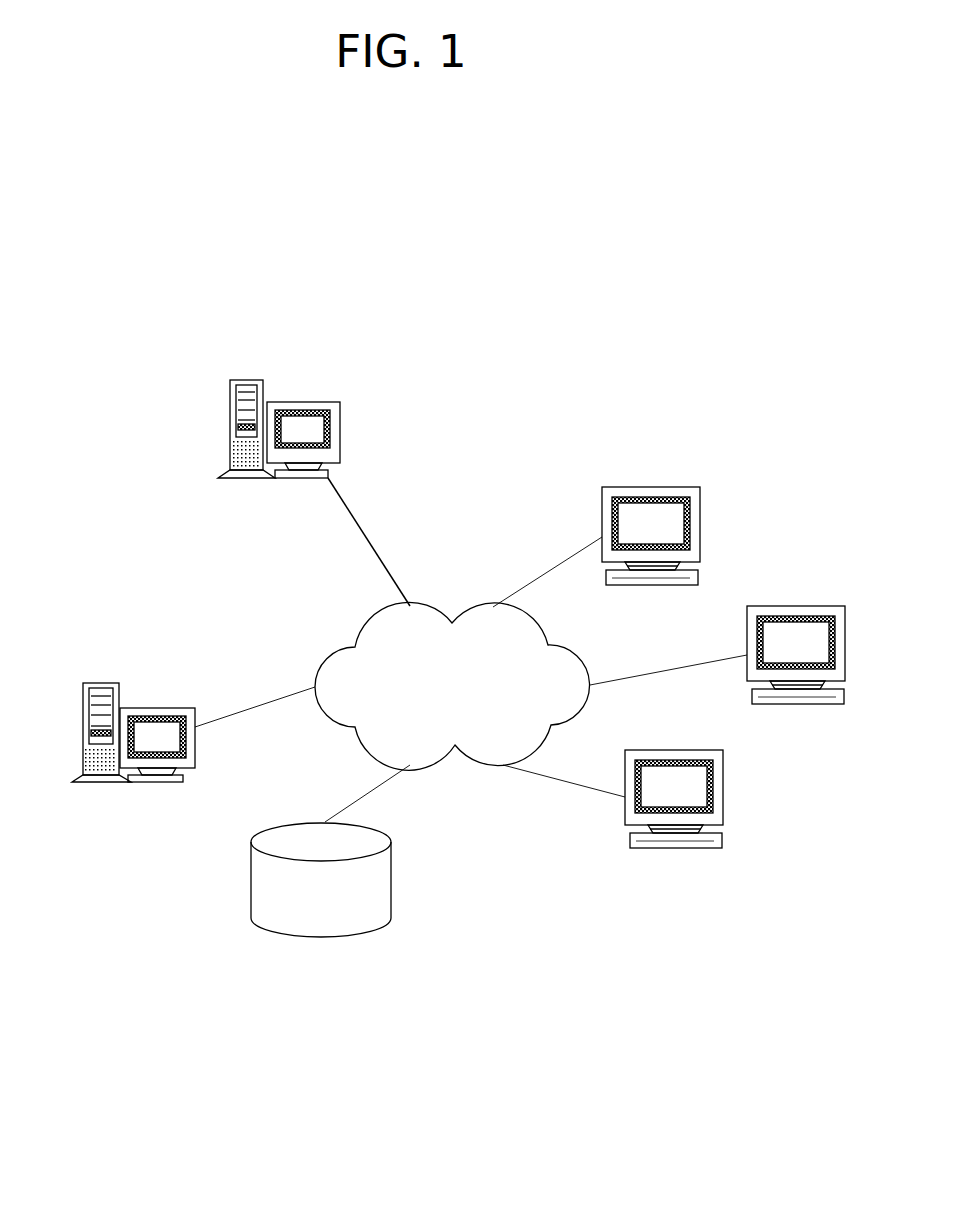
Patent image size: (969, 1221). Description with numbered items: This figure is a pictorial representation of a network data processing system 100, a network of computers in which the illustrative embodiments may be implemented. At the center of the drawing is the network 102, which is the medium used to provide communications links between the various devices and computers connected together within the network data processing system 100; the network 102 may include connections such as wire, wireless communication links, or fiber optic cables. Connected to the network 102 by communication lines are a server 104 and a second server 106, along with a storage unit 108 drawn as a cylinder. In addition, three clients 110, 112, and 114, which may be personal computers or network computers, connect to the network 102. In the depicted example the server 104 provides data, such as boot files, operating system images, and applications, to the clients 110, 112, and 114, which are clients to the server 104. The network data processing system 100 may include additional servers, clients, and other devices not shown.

The network data processing system 100 is at (124, 543).
The network 102 is at (435, 708).
The server 104 is at (302, 402).
The server 106 is at (157, 708).
The storage unit 108 is at (320, 936).
The client 110 is at (650, 487).
The client 112 is at (795, 606).
The client 114 is at (723, 797).